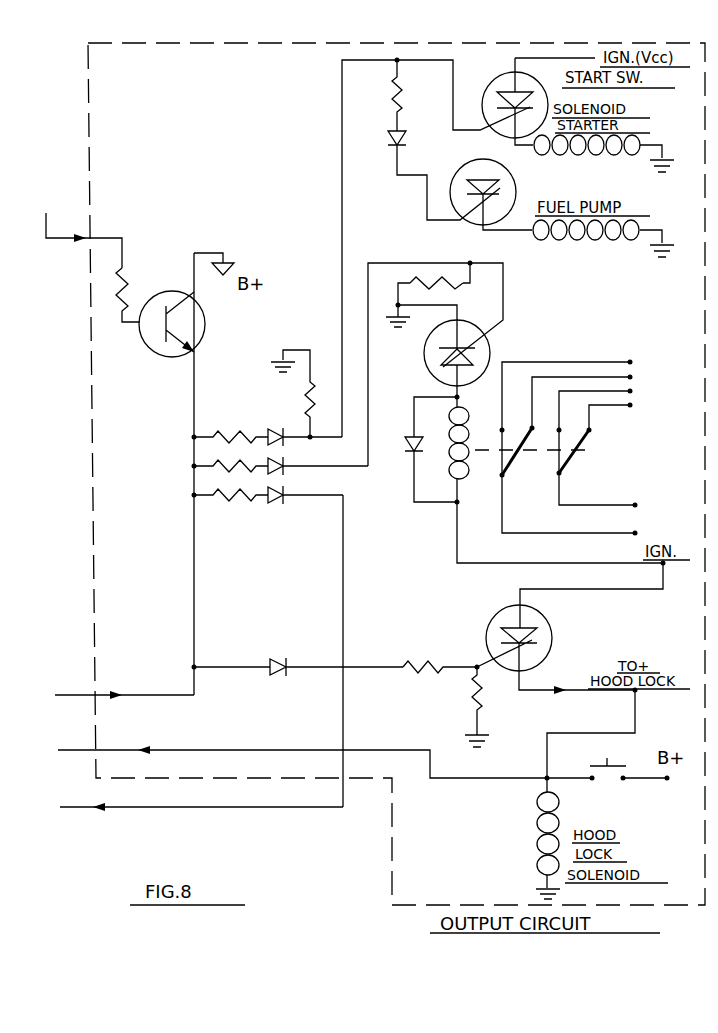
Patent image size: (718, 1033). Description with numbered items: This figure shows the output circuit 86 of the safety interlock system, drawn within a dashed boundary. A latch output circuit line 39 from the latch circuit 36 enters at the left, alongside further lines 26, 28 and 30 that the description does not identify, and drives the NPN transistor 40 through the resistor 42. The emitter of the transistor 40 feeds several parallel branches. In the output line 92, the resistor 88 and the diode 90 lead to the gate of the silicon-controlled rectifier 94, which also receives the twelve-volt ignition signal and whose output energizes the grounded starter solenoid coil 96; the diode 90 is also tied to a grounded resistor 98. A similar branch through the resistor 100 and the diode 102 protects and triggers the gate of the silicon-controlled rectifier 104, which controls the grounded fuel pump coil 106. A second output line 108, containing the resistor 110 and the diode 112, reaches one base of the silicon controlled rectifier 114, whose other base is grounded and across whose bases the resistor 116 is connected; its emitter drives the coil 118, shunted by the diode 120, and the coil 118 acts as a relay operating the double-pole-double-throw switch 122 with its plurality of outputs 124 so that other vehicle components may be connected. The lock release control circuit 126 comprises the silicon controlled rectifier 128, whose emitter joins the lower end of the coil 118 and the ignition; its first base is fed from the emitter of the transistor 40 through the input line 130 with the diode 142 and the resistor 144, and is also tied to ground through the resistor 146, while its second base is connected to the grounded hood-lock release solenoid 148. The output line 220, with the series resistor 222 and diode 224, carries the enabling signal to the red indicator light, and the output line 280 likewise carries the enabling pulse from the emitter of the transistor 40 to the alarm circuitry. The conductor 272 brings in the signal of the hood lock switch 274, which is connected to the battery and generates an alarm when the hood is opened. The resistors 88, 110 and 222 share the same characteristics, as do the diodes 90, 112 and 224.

The output circuit 86 is at (122, 133).
The latch circuit 36 is at (90, 187).
The latch output circuit line 39 is at (62, 241).
The conductor 26 is at (10, 288).
The conductor 28 is at (10, 333).
The conductor 30 is at (11, 378).
The resistor 42 is at (135, 262).
The NPN transistor 40 is at (158, 343).
The resistor 88 is at (226, 432).
The diode 90 is at (274, 430).
The resistor 98 is at (315, 380).
The resistor 110 is at (215, 468).
The diode 112 is at (290, 468).
The resistor 222 is at (222, 498).
The diode 224 is at (283, 502).
The output line 92 is at (337, 146).
The resistor 100 is at (404, 84).
The diode 102 is at (388, 148).
The silicon-controlled rectifier 94 is at (498, 77).
The starter solenoid coil 96 is at (605, 150).
The silicon-controlled rectifier 104 is at (506, 186).
The fuel pump coil 106 is at (580, 236).
The second output line 108 is at (392, 262).
The resistor 116 is at (428, 287).
The silicon controlled rectifier 114 is at (432, 352).
The diode 120 is at (406, 462).
The coil 118 is at (463, 487).
The double-pole-double-throw switch 122 is at (586, 435).
The outputs 124 is at (632, 363).
The lock release control circuit 126 is at (468, 604).
The silicon controlled rectifier 128 is at (534, 625).
The input line 130 is at (220, 665).
The diode 142 is at (277, 660).
The resistor 144 is at (405, 657).
The resistor 146 is at (483, 706).
The output line 280 is at (70, 693).
The conductor 272 is at (75, 748).
The hood lock switch 274 is at (602, 783).
The output line 220 is at (68, 810).
The hood-lock release solenoid 148 is at (540, 817).